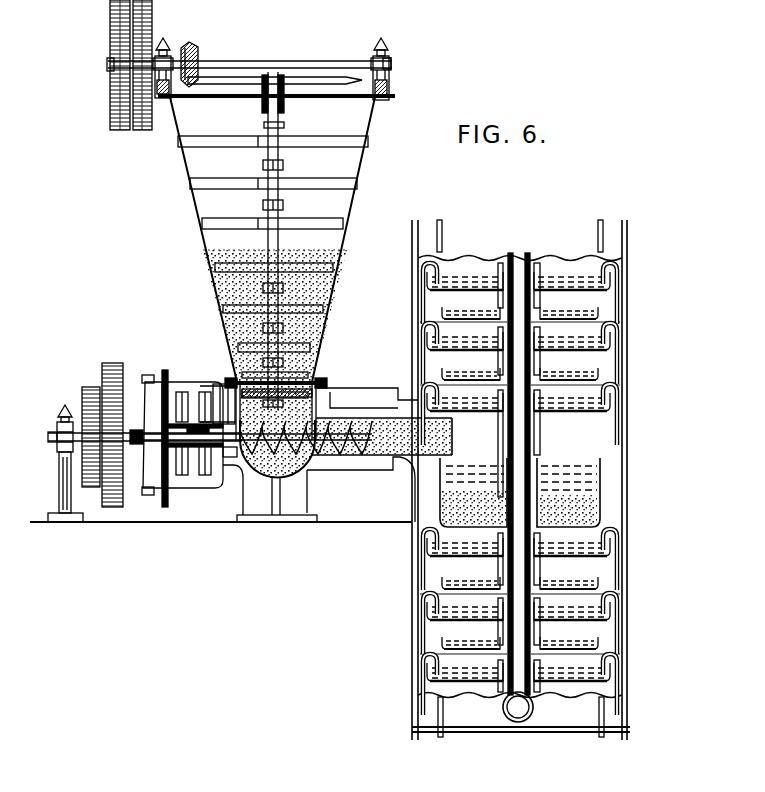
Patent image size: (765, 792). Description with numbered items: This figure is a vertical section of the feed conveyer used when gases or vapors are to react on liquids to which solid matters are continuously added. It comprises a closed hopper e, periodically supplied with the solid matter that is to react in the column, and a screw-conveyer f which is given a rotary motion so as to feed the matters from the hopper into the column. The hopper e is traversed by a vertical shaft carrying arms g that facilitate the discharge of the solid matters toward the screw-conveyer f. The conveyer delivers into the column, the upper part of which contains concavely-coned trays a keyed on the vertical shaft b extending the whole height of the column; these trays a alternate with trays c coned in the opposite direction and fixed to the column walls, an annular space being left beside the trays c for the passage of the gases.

The concavely-coned trays a is at (568, 318).
The vertical shaft b is at (518, 487).
The trays c is at (568, 360).
The closed hopper e is at (203, 221).
The screw-conveyer f is at (267, 457).
The arms g is at (243, 138).